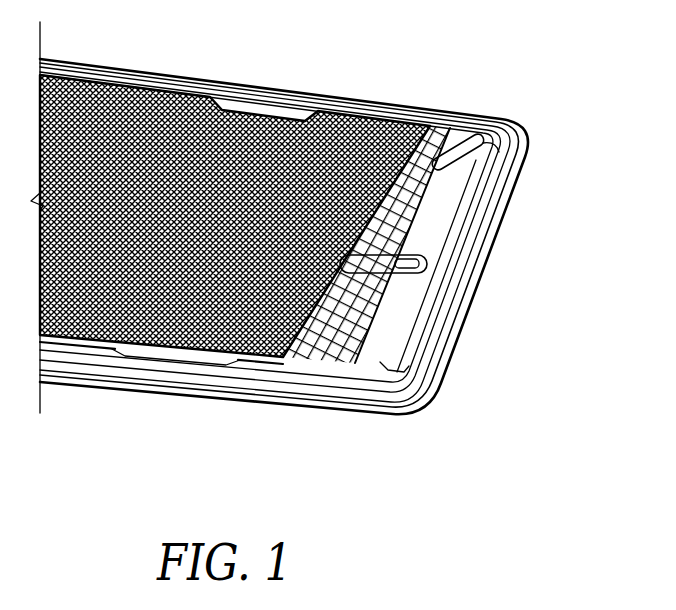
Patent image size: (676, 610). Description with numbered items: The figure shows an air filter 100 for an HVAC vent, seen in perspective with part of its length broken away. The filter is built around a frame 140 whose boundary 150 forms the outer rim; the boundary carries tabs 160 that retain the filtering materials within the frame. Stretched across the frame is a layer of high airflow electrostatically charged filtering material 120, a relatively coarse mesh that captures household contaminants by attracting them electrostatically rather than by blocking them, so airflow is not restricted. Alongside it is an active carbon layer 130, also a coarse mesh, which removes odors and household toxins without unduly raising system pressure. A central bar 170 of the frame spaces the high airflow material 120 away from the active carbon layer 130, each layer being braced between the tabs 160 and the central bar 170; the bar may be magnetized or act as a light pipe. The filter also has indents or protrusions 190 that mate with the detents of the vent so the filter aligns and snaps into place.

The air filter 100 is at (511, 72).
The high airflow electrostatically charged filtering material 120 is at (203, 298).
The active carbon layer 130 is at (314, 373).
The frame 140 is at (432, 352).
The boundary 150 is at (520, 142).
The tabs 160 is at (293, 113).
The central bar 170 is at (395, 268).
The indents or protrusions 190 is at (388, 264).